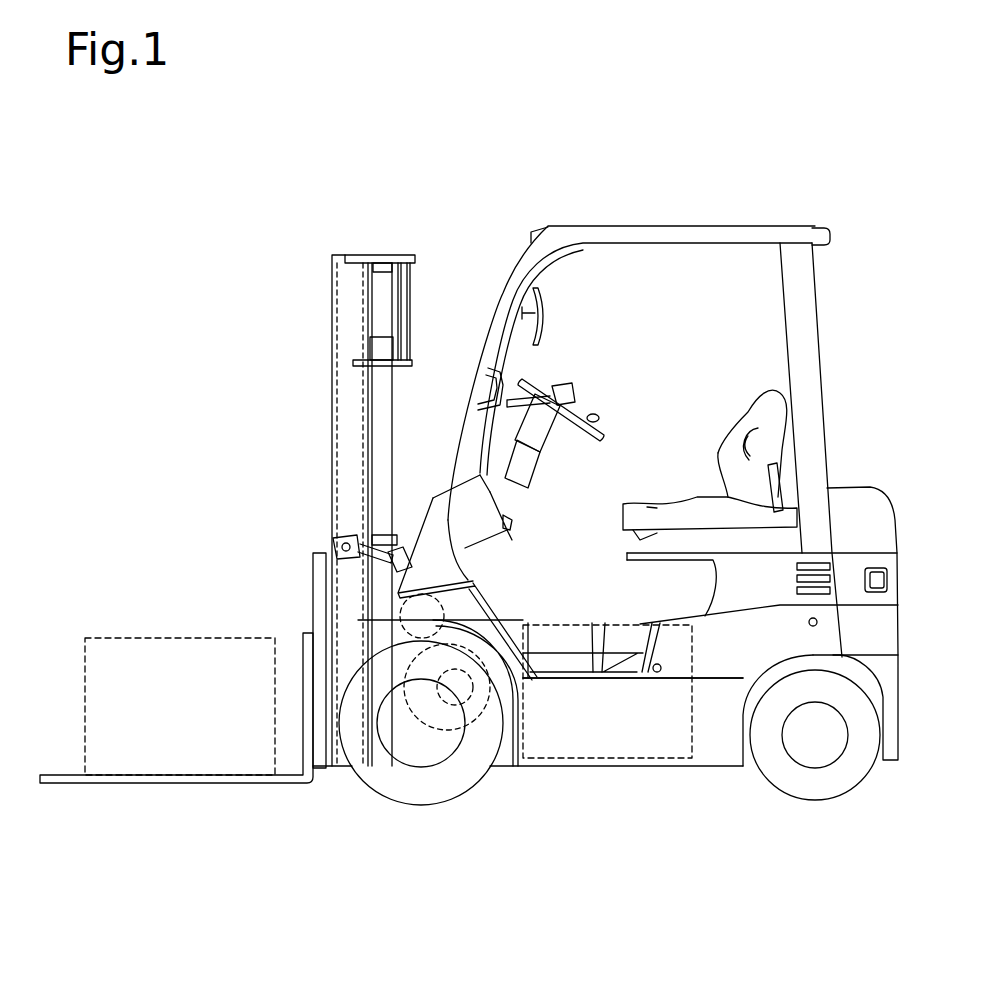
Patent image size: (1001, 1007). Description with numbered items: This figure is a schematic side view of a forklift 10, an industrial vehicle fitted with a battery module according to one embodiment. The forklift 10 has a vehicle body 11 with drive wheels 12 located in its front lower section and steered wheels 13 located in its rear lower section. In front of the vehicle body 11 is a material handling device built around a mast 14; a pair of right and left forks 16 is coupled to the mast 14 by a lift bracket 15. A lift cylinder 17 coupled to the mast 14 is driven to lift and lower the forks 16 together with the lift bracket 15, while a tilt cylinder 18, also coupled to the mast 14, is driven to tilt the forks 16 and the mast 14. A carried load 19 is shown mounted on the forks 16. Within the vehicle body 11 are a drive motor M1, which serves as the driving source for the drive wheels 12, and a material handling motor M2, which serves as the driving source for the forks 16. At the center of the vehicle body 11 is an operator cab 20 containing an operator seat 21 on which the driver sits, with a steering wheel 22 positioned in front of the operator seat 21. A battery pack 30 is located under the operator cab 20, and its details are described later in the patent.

The forklift 10 is at (427, 197).
The vehicle body 11 is at (606, 805).
The drive wheels 12 is at (417, 805).
The steered wheels 13 is at (812, 800).
The mast 14 is at (311, 236).
The lift bracket 15 is at (330, 549).
The forks 16 is at (150, 774).
The lift cylinder 17 is at (384, 405).
The tilt cylinder 18 is at (405, 556).
The carried load 19 is at (205, 637).
The operator cab 20 is at (704, 309).
The operator seat 21 is at (748, 412).
The steering wheel 22 is at (605, 432).
The battery pack 30 is at (560, 622).
The drive motor M1 is at (480, 727).
The material handling motor M2 is at (470, 577).